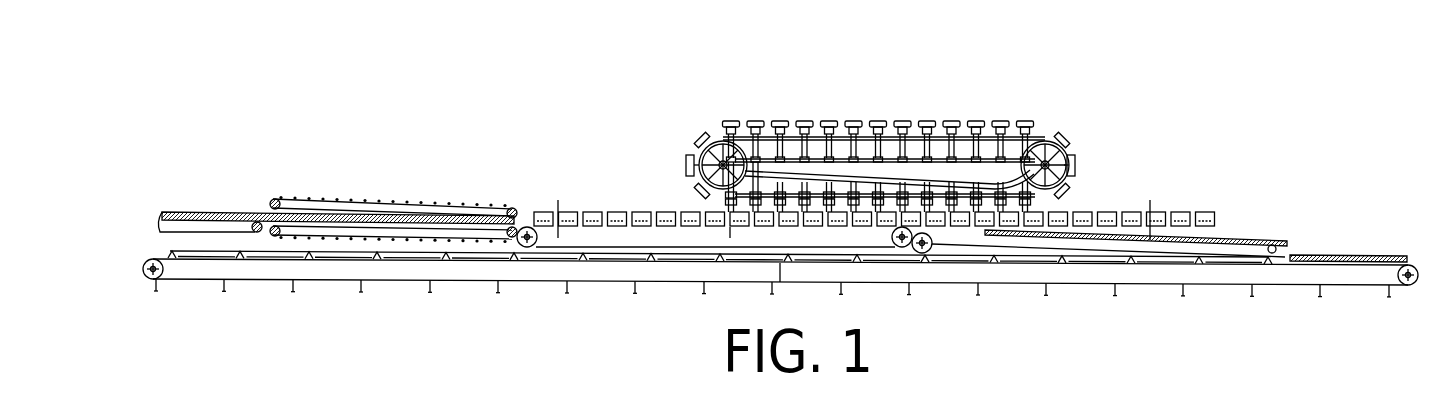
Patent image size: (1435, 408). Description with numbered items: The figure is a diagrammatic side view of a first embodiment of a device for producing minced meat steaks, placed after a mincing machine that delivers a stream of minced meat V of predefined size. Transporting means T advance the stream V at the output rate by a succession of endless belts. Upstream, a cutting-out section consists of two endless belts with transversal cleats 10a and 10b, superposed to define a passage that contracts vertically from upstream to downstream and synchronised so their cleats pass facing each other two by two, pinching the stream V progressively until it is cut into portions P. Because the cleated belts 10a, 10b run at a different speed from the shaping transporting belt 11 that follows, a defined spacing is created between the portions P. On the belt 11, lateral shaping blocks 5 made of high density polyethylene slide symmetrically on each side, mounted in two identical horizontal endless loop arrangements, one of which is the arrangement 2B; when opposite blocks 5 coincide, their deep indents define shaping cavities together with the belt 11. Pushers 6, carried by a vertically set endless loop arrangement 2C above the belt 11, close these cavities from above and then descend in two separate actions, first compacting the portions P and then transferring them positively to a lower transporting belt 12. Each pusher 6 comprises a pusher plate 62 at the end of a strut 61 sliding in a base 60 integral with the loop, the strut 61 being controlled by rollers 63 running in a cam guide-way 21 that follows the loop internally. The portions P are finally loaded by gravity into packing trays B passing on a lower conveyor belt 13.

The transporting means T is at (149, 231).
The stream of minced meat V is at (216, 216).
The endless belt with transversal cleats 10a is at (337, 230).
The endless belt with transversal cleats 10b is at (448, 210).
The shaping transporting belt 11 is at (613, 238).
The endless loop arrangement 2C is at (892, 136).
The base 60 is at (730, 128).
The strut 61 is at (806, 157).
The pusher plate 62 is at (853, 128).
The rollers 63 is at (880, 162).
The guide-way 21 is at (937, 158).
The pushers 6 is at (975, 127).
The lateral shaping blocks 5 is at (1106, 215).
The endless loop arrangement 2B is at (1109, 199).
The portions P is at (1250, 245).
The packing trays B is at (1280, 257).
The transporting belt 12 is at (1073, 248).
The lower conveyor belt 13 is at (1238, 276).